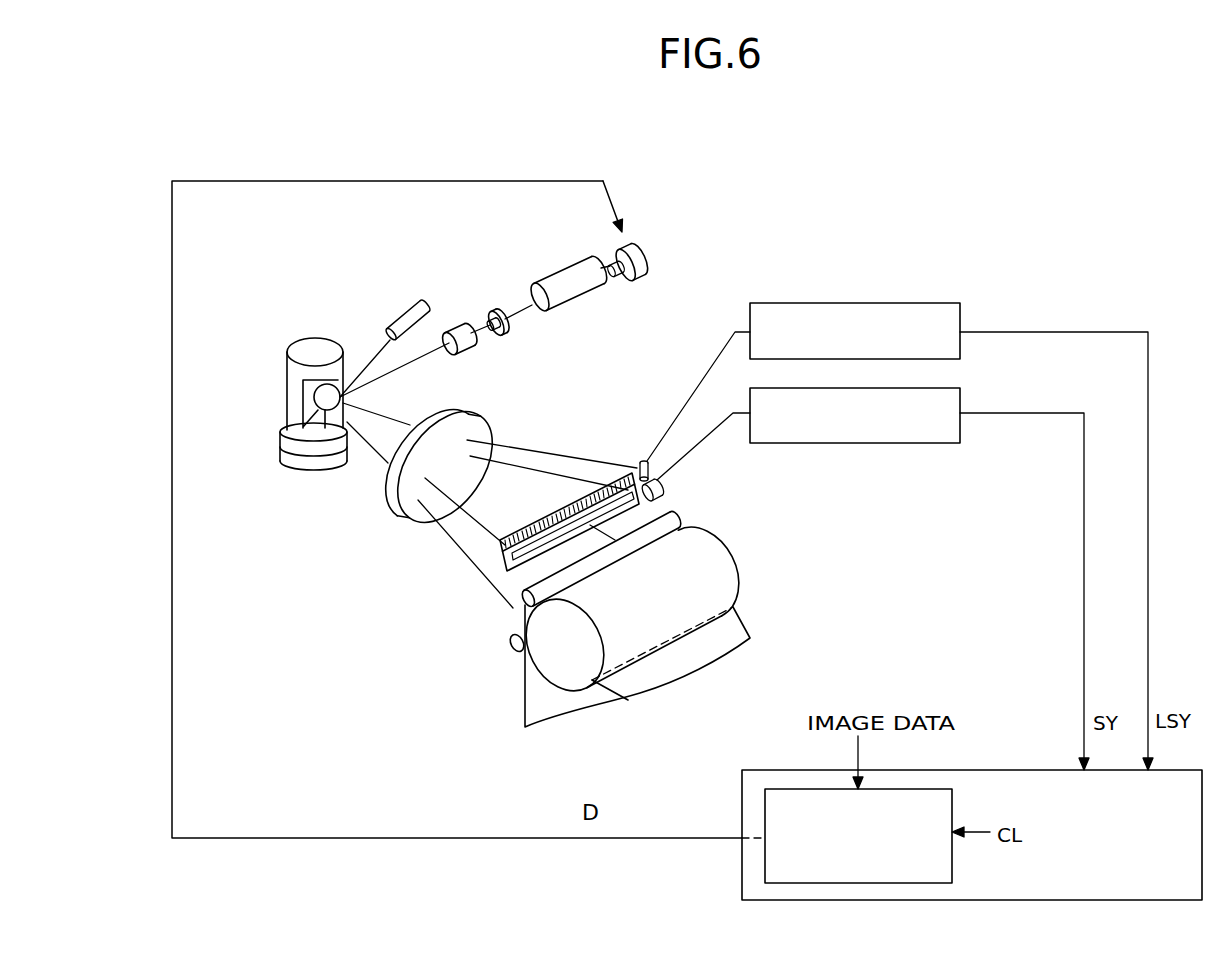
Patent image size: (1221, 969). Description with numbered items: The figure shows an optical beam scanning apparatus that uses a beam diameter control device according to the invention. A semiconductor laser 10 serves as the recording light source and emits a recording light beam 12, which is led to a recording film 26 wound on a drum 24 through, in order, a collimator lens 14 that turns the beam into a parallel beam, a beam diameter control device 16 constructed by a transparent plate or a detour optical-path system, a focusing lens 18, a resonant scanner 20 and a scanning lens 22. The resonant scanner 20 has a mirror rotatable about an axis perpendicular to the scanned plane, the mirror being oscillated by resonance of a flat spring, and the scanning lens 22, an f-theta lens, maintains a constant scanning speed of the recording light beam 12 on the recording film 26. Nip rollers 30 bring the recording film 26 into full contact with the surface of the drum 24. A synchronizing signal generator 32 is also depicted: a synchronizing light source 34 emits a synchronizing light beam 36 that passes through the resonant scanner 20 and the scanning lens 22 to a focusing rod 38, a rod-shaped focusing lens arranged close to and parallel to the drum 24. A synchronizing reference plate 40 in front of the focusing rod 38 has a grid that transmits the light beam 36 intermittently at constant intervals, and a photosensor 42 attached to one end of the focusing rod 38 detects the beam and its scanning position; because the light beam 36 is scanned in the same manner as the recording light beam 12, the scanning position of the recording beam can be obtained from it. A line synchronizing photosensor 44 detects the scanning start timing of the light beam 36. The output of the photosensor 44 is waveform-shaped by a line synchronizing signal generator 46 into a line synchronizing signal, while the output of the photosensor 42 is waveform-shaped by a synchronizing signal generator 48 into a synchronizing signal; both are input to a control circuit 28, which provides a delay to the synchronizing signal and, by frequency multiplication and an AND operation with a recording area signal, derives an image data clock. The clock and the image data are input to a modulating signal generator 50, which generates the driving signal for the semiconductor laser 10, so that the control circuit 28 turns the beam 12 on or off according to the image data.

The semiconductor laser 10 is at (645, 241).
The recording light beam 12 is at (607, 272).
The collimator lens 14 is at (552, 271).
The beam diameter control device 16 is at (512, 332).
The focusing lens 18 is at (480, 347).
The resonant scanner 20 is at (287, 379).
The scanning lens 22 is at (398, 503).
The drum 24 is at (750, 562).
The recording film 26 is at (747, 624).
The control circuit 28 is at (774, 770).
The nip rollers 30 is at (517, 605).
The synchronizing signal generator 32 is at (660, 422).
The synchronizing light source 34 is at (408, 307).
The synchronizing light beam 36 is at (370, 357).
The focusing rod 38 is at (672, 509).
The synchronizing reference plate 40 is at (598, 490).
The photosensor 42 is at (660, 484).
The line synchronizing photosensor 44 is at (642, 460).
The line synchronizing signal generator 46 is at (897, 303).
The synchronizing signal generator 48 is at (897, 444).
The modulating signal generator 50 is at (765, 803).